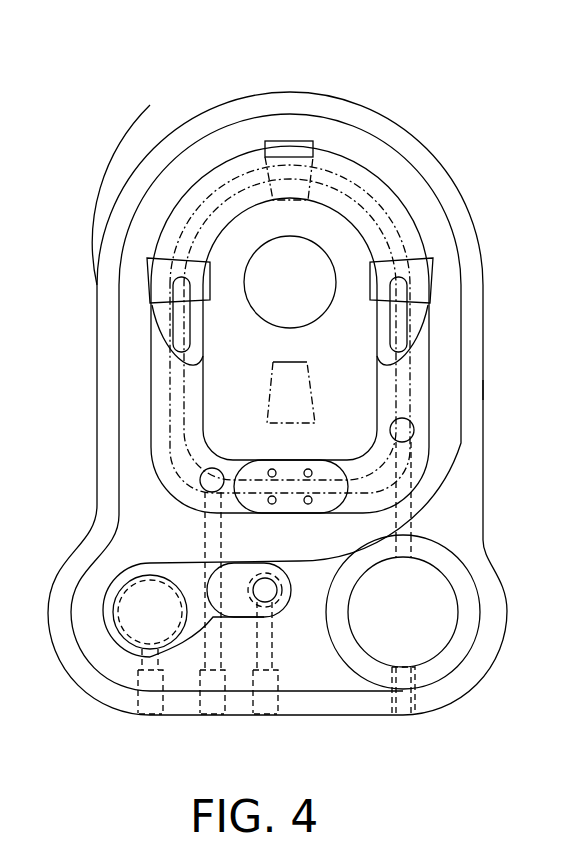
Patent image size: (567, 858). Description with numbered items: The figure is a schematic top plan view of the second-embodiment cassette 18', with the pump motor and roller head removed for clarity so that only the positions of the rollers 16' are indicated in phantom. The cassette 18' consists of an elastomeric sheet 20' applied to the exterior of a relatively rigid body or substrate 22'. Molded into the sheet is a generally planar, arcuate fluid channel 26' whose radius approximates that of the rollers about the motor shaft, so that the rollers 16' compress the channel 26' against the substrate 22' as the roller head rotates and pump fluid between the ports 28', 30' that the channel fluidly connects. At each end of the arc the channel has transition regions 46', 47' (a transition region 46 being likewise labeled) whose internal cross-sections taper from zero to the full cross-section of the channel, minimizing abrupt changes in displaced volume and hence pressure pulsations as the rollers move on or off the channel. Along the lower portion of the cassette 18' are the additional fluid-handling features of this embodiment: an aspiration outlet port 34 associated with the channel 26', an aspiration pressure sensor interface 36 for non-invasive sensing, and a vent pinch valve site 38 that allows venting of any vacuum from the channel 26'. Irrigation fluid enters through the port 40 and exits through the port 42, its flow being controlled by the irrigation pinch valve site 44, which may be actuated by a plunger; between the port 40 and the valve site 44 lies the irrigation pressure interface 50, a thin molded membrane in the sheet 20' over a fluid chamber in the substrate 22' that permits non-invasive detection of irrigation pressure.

The cassette 18' is at (277, 369).
The elastomeric sheet 20' is at (245, 394).
The substrate 22' is at (96, 195).
The channel 26' is at (304, 309).
The rollers 16' is at (291, 240).
The channel transition region 46' is at (124, 321).
The channel transition region 47' is at (455, 321).
The port 28' is at (132, 590).
The port 30' is at (460, 565).
The vent pinch valve site 38 is at (348, 505).
The irrigation pressure interface 50 is at (118, 632).
The irrigation pinch valve site 44 is at (290, 605).
The aspiration pressure sensor interface 36 is at (452, 636).
The port 40 is at (153, 716).
The aspiration outlet port 34 is at (215, 716).
The port 42 is at (270, 716).
The channel transition region 46 is at (525, 392).